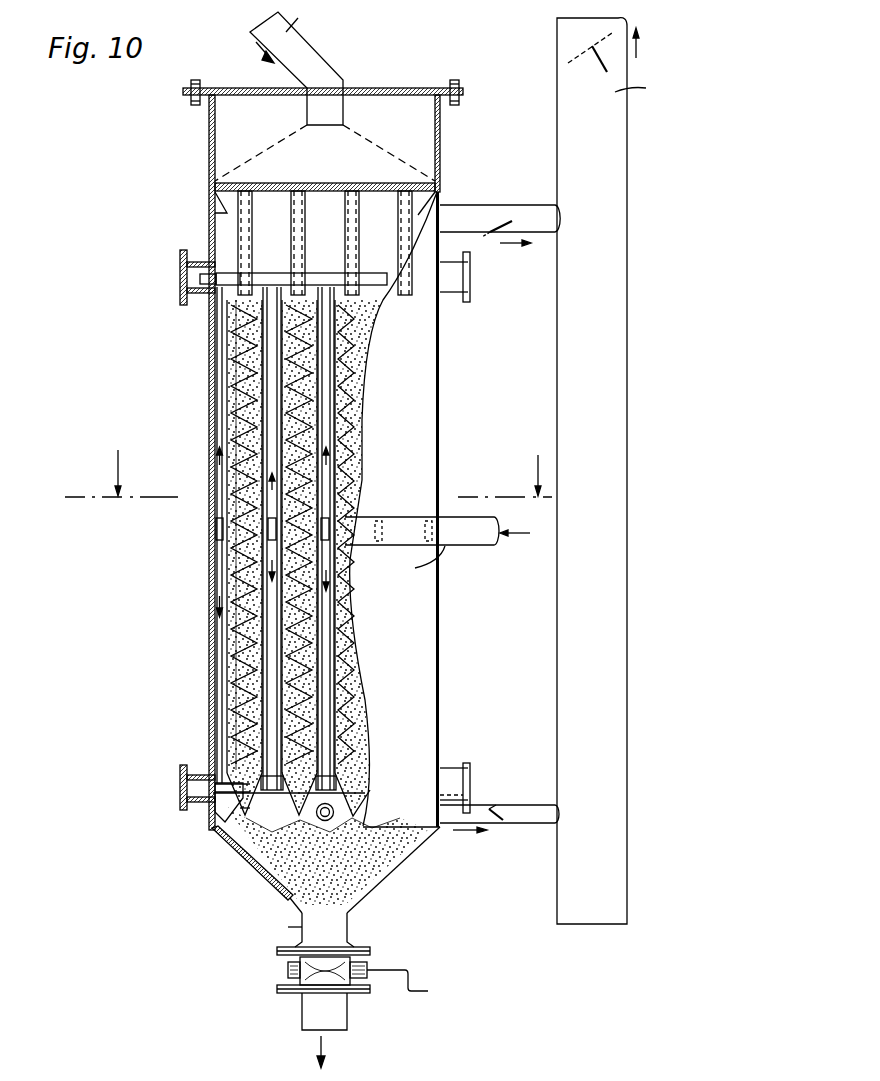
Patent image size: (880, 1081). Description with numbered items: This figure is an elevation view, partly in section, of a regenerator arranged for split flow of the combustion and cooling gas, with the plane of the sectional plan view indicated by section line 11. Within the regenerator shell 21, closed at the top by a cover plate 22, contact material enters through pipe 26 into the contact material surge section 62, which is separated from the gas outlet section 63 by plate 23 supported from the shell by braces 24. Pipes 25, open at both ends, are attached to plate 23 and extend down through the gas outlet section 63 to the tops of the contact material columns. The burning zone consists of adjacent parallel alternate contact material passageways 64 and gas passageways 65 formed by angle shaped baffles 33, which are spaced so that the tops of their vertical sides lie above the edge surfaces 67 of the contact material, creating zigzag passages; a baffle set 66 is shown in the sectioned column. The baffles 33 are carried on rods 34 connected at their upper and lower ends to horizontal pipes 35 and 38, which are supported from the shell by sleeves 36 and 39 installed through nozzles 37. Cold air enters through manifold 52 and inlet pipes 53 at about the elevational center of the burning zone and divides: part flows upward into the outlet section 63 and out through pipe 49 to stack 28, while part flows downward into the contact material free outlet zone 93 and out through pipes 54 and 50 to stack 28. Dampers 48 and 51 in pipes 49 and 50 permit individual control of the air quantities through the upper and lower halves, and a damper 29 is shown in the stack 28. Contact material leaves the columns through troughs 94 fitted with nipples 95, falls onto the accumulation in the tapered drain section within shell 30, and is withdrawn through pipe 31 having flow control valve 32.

The section line 11- 11 is at (308, 473).
The regenerator shell 21 is at (209, 150).
The top cover plate 22 is at (408, 90).
The plate 23 is at (342, 193).
The braces 24 is at (213, 196).
The pipes 25 is at (290, 235).
The pipe 26 is at (312, 45).
The stack 28 is at (630, 150).
The damper 29 is at (568, 60).
The shell 30 is at (262, 872).
The pipe 31 is at (340, 926).
The flow control valve 32 is at (368, 993).
The angle shaped baffles 33 is at (236, 405).
The rods 34 is at (226, 367).
The horizontal pipe 35 is at (330, 266).
The sleeve 36 is at (187, 278).
The nozzles 37 is at (192, 262).
The horizontal pipe 38 is at (332, 782).
The sleeve 39 is at (190, 790).
The damper 48 is at (500, 216).
The pipe 49 is at (465, 212).
The pipe 50 is at (532, 825).
The damper 51 is at (498, 808).
The manifold 52 is at (476, 546).
The pipes 53 is at (268, 535).
The pipe 54 is at (326, 855).
The contact material surge section 62 is at (232, 120).
The gas outlet section 63 is at (378, 259).
The contact material passageways 64 is at (232, 583).
The gas passageways 65 is at (270, 643).
The baffles 66 is at (232, 432).
The edge surfaces 67 is at (232, 660).
The outlet zone 93 is at (224, 812).
The troughs 94 is at (232, 793).
The nipples 95 is at (252, 801).